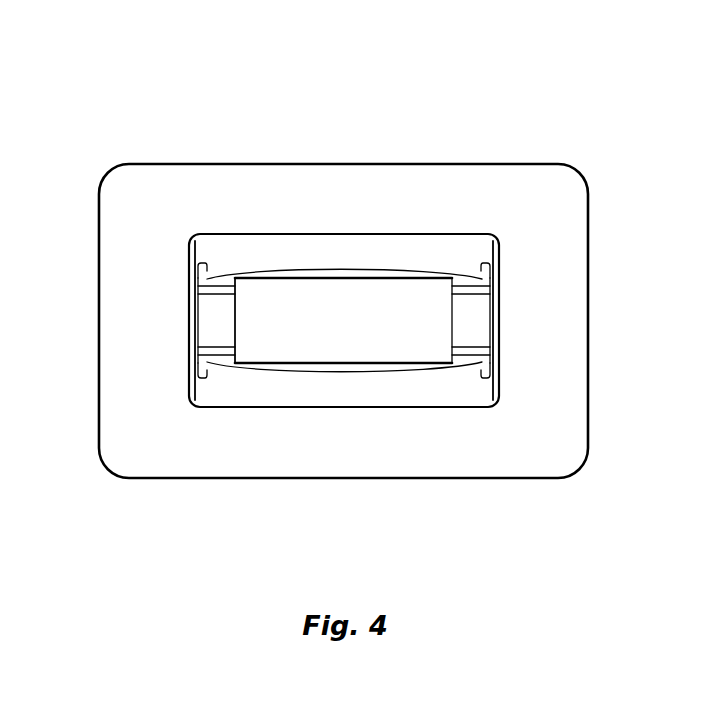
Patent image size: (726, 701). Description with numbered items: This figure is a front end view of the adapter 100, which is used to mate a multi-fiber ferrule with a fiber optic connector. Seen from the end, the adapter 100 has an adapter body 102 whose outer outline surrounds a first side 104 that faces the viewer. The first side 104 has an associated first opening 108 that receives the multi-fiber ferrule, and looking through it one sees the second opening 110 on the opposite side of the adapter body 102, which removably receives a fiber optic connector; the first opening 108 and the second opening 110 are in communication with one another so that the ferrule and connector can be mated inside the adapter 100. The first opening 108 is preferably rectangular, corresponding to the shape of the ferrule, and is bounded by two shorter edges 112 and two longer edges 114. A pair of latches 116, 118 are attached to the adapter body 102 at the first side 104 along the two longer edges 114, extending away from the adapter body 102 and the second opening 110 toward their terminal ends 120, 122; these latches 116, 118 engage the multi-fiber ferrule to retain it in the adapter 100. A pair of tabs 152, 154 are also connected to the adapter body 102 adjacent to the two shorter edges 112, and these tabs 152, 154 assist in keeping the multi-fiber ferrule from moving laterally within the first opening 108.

The adapter 100 is at (356, 283).
The adapter body 102 is at (590, 182).
The first side 104 is at (512, 397).
The first opening 108 is at (432, 316).
The second opening 110 is at (252, 309).
The shorter edges 112 is at (483, 300).
The longer edges 114 is at (384, 277).
The latch 116 is at (203, 253).
The latch 118 is at (493, 407).
The terminal end 120 is at (272, 248).
The terminal end 122 is at (400, 392).
The tab 152 is at (481, 340).
The tab 154 is at (209, 336).